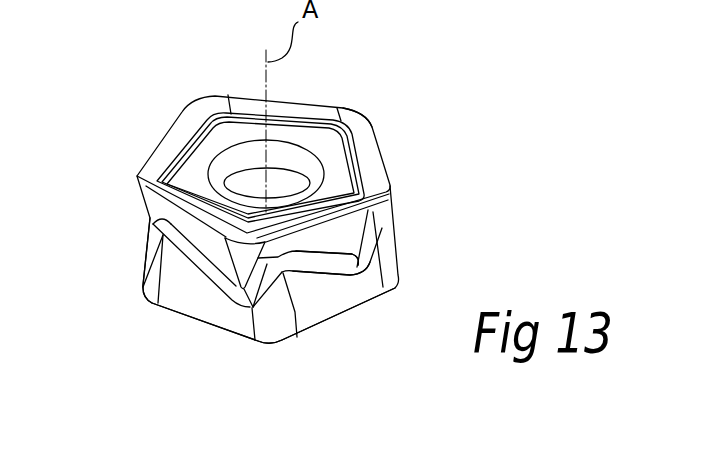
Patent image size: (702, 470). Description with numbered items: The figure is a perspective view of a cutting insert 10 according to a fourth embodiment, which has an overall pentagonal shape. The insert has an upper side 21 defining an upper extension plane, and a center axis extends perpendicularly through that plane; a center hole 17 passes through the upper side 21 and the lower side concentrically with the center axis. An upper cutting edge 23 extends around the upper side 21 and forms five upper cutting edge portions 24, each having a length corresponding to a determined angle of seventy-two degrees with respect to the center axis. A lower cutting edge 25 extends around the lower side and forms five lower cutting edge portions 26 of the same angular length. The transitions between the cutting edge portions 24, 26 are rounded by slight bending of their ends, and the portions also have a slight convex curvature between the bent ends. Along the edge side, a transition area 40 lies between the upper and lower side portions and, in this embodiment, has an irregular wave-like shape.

The cutting insert 10 is at (440, 126).
The center hole 17 is at (277, 158).
The upper side 21 is at (211, 149).
The upper cutting edge 23 is at (363, 110).
The upper cutting edge portion 24 is at (250, 97).
The lower cutting edge 25 is at (141, 296).
The lower cutting edge portion 26 is at (182, 315).
The transition area 40 is at (328, 267).